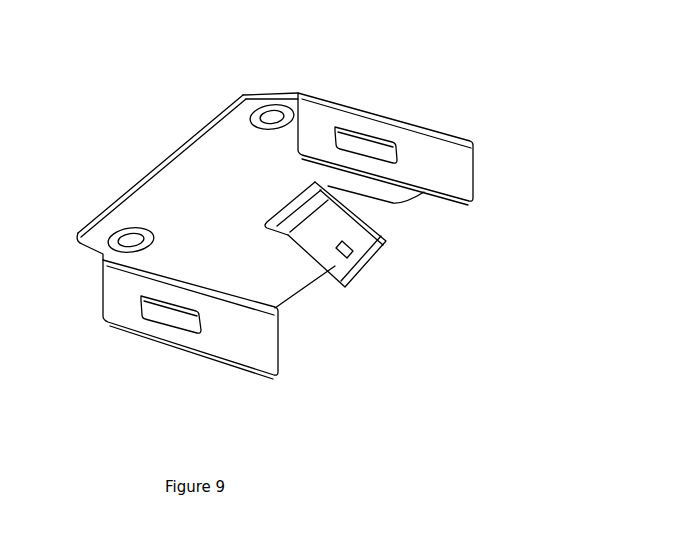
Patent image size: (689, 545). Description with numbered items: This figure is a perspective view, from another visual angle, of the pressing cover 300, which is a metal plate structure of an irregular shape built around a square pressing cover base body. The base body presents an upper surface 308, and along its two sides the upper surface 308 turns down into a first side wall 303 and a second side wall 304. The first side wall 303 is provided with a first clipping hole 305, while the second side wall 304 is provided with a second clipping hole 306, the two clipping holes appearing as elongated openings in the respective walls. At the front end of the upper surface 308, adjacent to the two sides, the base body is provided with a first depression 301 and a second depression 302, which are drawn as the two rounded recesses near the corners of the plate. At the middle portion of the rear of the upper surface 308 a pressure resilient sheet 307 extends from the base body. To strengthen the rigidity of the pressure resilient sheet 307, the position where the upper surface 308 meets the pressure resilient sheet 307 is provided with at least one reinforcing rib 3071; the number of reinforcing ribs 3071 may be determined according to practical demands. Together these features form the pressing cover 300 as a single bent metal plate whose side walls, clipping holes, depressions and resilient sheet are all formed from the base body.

The pressing cover 300 is at (412, 332).
The first depression 301 is at (106, 225).
The second depression 302 is at (280, 127).
The first side wall 303 is at (185, 348).
The second side wall 304 is at (403, 114).
The first clipping hole 305 is at (163, 317).
The second clipping hole 306 is at (367, 148).
The pressure resilient sheet 307 is at (382, 293).
The reinforcing rib 3071 is at (308, 250).
The upper surface 308 is at (217, 182).